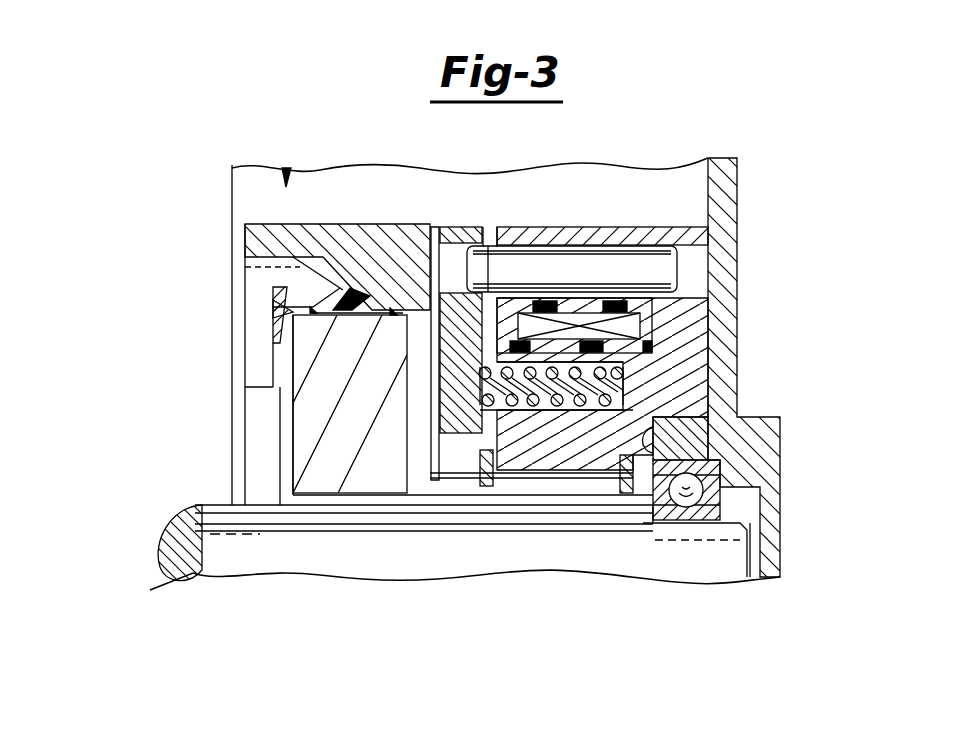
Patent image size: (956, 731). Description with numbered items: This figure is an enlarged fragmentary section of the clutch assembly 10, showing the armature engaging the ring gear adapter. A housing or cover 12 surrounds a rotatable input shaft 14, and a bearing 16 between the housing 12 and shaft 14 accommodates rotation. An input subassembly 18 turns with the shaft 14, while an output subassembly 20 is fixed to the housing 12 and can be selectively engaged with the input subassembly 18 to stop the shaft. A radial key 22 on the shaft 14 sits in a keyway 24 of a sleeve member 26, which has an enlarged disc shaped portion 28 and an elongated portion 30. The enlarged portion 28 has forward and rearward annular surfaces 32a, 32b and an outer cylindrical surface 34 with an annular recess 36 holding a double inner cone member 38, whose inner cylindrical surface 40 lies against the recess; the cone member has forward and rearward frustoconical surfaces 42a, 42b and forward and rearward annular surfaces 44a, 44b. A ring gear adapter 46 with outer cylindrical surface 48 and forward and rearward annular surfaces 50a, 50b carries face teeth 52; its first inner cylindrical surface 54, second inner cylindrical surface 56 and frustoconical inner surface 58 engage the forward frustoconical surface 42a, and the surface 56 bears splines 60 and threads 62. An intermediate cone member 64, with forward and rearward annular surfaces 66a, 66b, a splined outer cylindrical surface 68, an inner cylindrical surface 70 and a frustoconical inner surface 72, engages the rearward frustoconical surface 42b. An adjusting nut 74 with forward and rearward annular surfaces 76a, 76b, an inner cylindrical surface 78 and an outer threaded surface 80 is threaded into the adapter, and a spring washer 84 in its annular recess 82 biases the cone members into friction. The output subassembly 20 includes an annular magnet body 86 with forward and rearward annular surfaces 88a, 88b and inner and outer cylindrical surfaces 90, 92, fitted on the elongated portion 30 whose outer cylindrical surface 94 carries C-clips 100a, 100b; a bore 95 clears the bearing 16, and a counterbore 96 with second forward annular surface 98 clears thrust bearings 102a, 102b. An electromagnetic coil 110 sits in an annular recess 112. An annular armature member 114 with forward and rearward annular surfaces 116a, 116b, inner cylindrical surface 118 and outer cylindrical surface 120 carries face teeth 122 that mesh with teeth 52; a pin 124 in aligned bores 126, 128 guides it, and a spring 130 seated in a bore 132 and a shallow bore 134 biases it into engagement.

The clutch assembly 10 is at (802, 190).
The housing or cover 12 is at (737, 185).
The input shaft 14 is at (212, 557).
The bearing 16 is at (735, 480).
The input subassembly 18 is at (282, 224).
The output subassembly 20 is at (559, 183).
The key 22 is at (313, 500).
The keyway 24 is at (583, 472).
The sleeve member 26 is at (390, 493).
The enlarged disc shaped portion 28 is at (350, 407).
The elongated portion 30 is at (477, 472).
The forward annular surface 32a is at (400, 490).
The rearward annular surface 32b is at (293, 415).
The outer cylindrical surface 34 is at (397, 224).
The annular recess 36 is at (367, 224).
The double inner cone member 38 is at (315, 430).
The inner cylindrical surface 40 is at (340, 326).
The forward frustoconical surface 42a is at (378, 224).
The rearward frustoconical surface 42b is at (240, 224).
The forward annular surface 44a is at (370, 350).
The rearward annular surface 44b is at (293, 375).
The ring gear adapter 46 is at (215, 224).
The outer cylindrical surface 48 is at (313, 224).
The forward annular surface 50a is at (417, 224).
The rearward annular surface 50b is at (240, 224).
The face teeth 52 is at (455, 337).
The first inner cylindrical surface 54 is at (430, 365).
The second inner cylindrical surface 56 is at (250, 303).
The frustoconical inner surface 58 is at (347, 224).
The splines 60 is at (282, 224).
The threads 62 is at (245, 265).
The intermediate cone member 64 is at (262, 330).
The forward annular surface 66a is at (323, 224).
The rearward annular surface 66b is at (273, 313).
The outer cylindrical surface 68 is at (305, 218).
The inner cylindrical surface 70 is at (260, 353).
The frustoconical inner surface 72 is at (323, 364).
The adjusting nut 74 is at (250, 456).
The forward annular surface 76a is at (250, 480).
The rearward annular surface 76b is at (248, 440).
The inner cylindrical surface 78 is at (245, 395).
The outer threaded surface 80 is at (250, 237).
The annular recess 82 is at (247, 287).
The spring washer 84 is at (270, 338).
The annular magnet body 86 is at (583, 472).
The forward annular surface 88a is at (652, 345).
The rearward annular surface 88b is at (472, 480).
The inner cylindrical surface 90 is at (578, 483).
The outer cylindrical surface 92 is at (500, 227).
The outer cylindrical surface 94 is at (583, 497).
The bore 95 is at (672, 432).
The counterbore 96 is at (655, 462).
The second forward annular surface 98 is at (692, 490).
The C-clip 100a is at (632, 475).
The C-clip 100b is at (470, 472).
The thrust bearing 102a is at (623, 472).
The thrust bearing 102b is at (463, 480).
The electromagnetic coil 110 is at (705, 295).
The annular recess 112 is at (706, 310).
The annular armature member 114 is at (572, 269).
The forward annular surface 116a is at (517, 490).
The rearward annular surface 116b is at (398, 488).
The inner cylindrical surface 118 is at (458, 480).
The outer cylindrical surface 120 is at (470, 227).
The face teeth 122 is at (437, 227).
The pin 124 is at (563, 282).
The bore 126 is at (475, 253).
The bore 128 is at (700, 300).
The spring 130 is at (656, 296).
The bore 132 is at (665, 392).
The shallow bore 134 is at (668, 418).